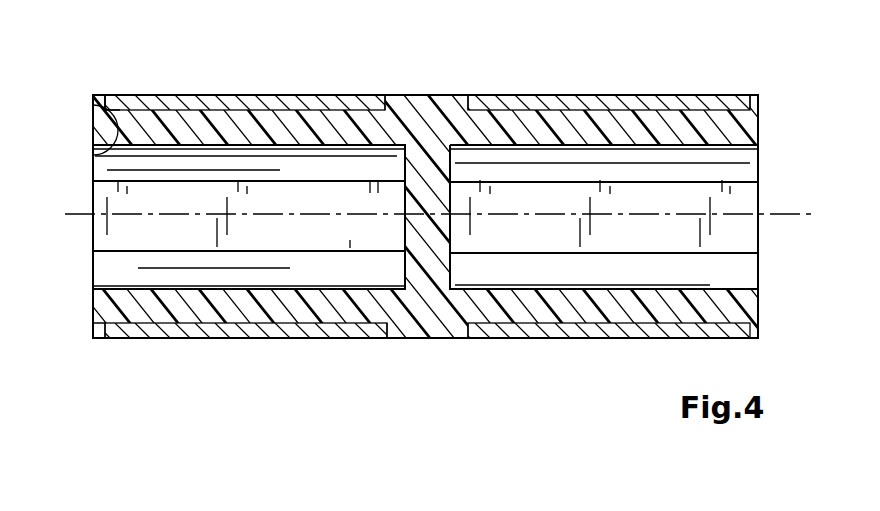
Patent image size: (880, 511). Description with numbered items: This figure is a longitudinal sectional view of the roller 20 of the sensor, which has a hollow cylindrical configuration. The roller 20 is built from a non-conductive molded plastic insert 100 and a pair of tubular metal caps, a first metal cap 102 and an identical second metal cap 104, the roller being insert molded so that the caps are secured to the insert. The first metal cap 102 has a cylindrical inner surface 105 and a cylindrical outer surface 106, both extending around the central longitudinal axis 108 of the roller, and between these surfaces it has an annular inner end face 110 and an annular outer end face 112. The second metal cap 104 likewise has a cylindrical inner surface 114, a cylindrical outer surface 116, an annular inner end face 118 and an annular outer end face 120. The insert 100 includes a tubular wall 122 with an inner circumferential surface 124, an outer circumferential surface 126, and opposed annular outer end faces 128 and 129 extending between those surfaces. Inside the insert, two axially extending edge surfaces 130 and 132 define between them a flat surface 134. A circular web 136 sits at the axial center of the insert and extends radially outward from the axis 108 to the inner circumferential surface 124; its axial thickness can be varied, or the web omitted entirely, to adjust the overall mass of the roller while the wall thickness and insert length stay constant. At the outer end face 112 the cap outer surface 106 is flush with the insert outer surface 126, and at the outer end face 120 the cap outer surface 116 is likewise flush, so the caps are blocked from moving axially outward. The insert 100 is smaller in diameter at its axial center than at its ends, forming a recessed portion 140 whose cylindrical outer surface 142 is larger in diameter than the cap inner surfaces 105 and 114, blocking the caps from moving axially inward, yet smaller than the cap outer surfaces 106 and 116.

The roller 20 is at (427, 427).
The plastic insert 100 is at (421, 90).
The first metal cap 102 is at (237, 85).
The second metal cap 104 is at (540, 85).
The cylindrical inner surface 105 is at (100, 156).
The cylindrical outer surface 106 is at (160, 96).
The central longitudinal axis 108 is at (625, 222).
The annular inner end face 110 is at (392, 96).
The annular outer end face 112 is at (100, 98).
The cylindrical inner surface 114 is at (758, 128).
The cylindrical outer surface 116 is at (677, 96).
The annular inner end face 118 is at (466, 96).
The annular outer end face 120 is at (755, 96).
The tubular wall 122 is at (279, 305).
The inner circumferential surface 124 is at (115, 287).
The outer circumferential surface 126 is at (100, 340).
The annular outer end face 128 is at (93, 313).
The annular outer end face 129 is at (758, 316).
The axially extending edge surface 130 is at (733, 251).
The axially extending edge surface 132 is at (660, 188).
The flat surface 134 is at (728, 204).
The circular web 136 is at (432, 243).
The recessed portion 140 is at (403, 352).
The cylindrical outer surface 142 is at (440, 340).